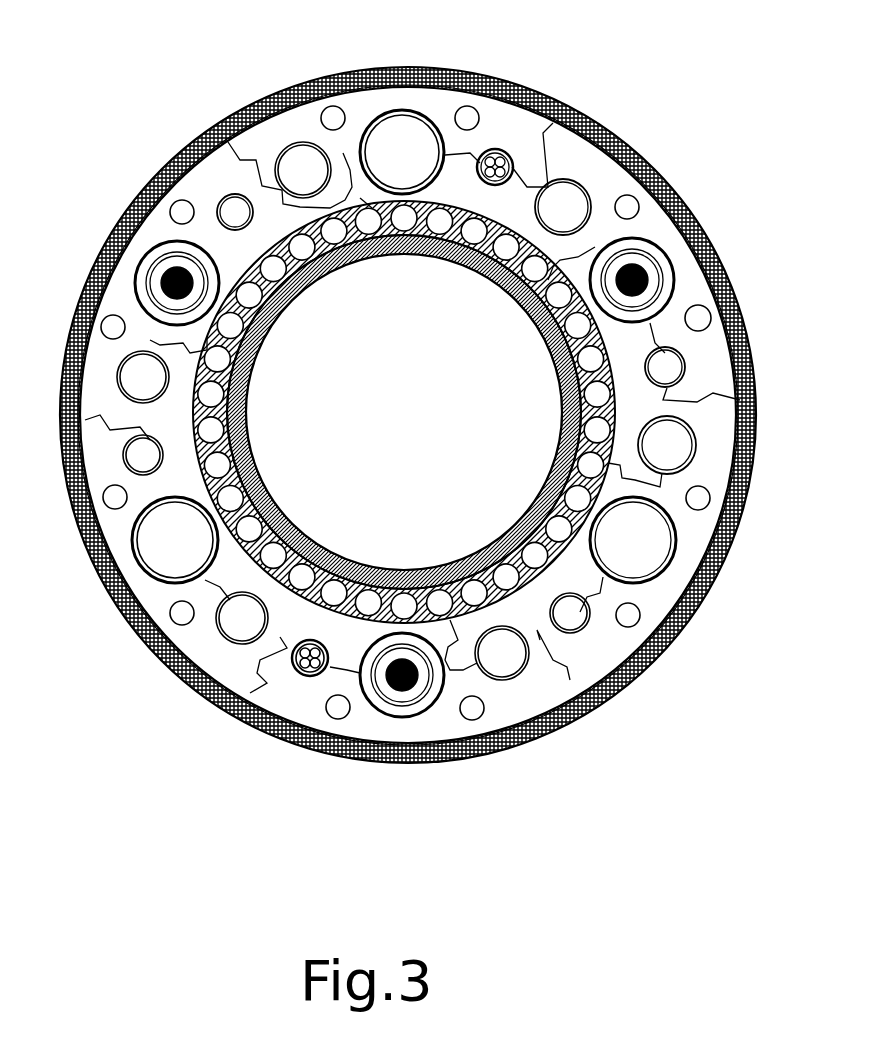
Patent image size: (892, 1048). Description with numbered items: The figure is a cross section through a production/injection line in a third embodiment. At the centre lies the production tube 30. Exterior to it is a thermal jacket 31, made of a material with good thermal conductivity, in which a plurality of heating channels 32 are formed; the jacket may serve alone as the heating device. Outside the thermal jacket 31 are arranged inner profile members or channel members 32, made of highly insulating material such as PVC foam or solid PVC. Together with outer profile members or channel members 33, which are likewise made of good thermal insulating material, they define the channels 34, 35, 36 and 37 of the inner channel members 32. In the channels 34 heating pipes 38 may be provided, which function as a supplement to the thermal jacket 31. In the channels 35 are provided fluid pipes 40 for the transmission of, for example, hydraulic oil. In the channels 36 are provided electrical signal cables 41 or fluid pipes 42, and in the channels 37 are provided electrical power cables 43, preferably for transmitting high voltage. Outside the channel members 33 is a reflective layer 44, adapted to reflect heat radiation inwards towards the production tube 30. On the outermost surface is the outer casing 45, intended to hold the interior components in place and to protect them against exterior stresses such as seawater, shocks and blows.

The production tube 30 is at (420, 252).
The thermal jacket 31 is at (198, 415).
The inner profile members or channel members 32 is at (288, 252).
The outer profile members or channel members 33 is at (680, 248).
The channel 34 is at (667, 568).
The channel 35 is at (688, 463).
The channel 36 is at (682, 378).
The channel 37 is at (690, 328).
The heating pipe 38 is at (360, 200).
The fluid pipe 40 is at (548, 190).
The electrical signal cable 41 is at (480, 165).
The fluid pipe 42 is at (232, 218).
The electrical power cable 43 is at (167, 257).
The reflective layer 44 is at (110, 272).
The outer casing 45 is at (741, 418).